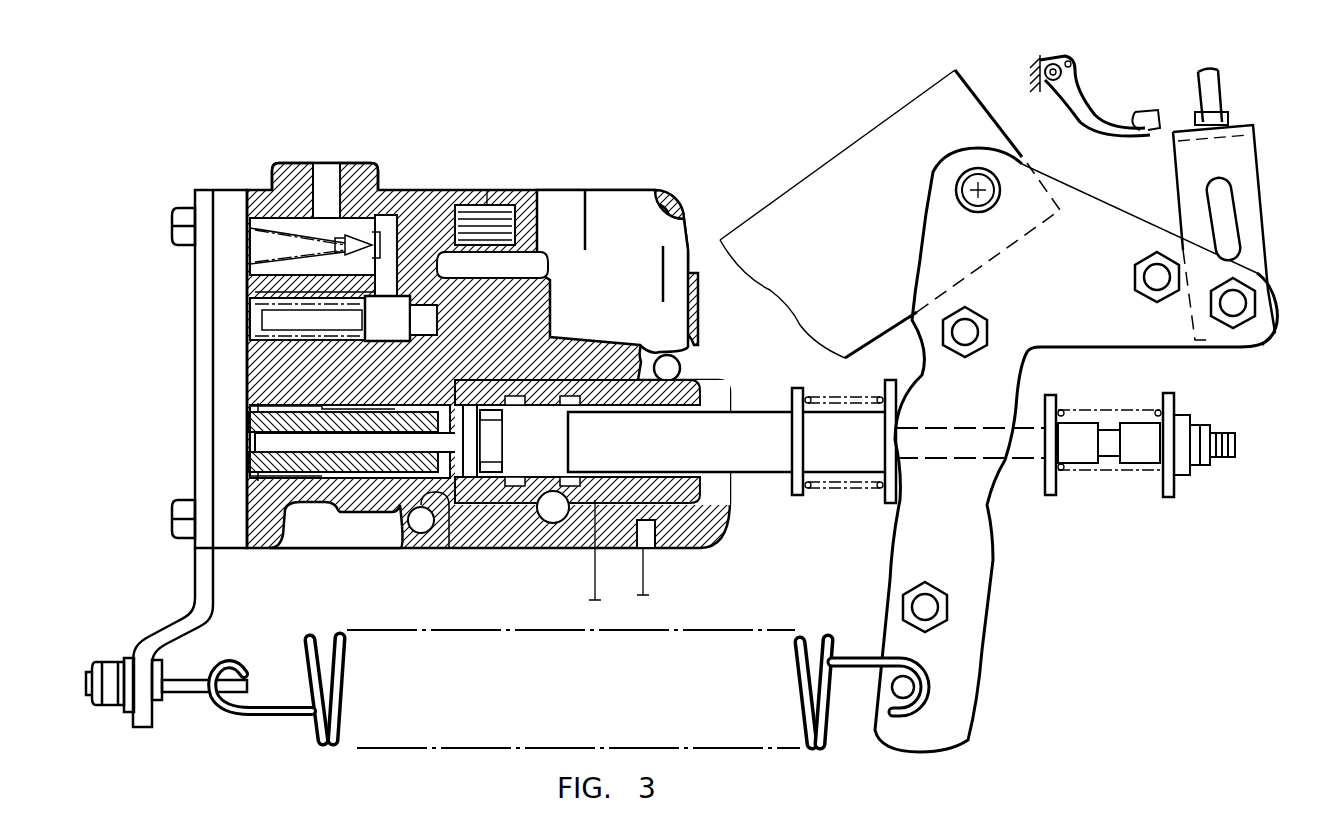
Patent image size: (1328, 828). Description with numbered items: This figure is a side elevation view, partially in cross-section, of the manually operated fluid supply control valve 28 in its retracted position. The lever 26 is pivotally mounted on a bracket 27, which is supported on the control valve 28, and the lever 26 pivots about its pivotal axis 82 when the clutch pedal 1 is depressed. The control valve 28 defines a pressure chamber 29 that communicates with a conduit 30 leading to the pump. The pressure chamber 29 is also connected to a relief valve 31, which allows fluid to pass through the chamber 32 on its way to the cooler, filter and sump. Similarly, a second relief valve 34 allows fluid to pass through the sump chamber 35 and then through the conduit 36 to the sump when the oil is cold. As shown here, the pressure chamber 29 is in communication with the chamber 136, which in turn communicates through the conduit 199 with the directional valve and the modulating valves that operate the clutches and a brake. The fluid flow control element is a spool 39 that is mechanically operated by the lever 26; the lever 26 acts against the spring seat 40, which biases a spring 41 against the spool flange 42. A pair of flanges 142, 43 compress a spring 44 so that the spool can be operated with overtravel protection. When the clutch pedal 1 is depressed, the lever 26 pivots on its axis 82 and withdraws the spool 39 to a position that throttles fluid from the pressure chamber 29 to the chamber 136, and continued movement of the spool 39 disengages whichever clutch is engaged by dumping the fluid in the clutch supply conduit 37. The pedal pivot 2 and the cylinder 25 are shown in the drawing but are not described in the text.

The clutch pedal 1 is at (1108, 120).
The pedal pivot 2 is at (1052, 82).
The hydraulic cylinder 25 is at (1255, 196).
The lever 26 is at (1175, 318).
The bracket 27 is at (880, 127).
The fluid supply control valve 28 is at (488, 361).
The pressure chamber 29 is at (508, 262).
The conduit 30 is at (493, 142).
The relief valve 31 is at (395, 312).
The chamber 32 is at (397, 268).
The relief valve 34 is at (328, 257).
The sump chamber 35 is at (330, 178).
The conduit 36 is at (328, 122).
The clutch supply conduit 37 is at (498, 480).
The spool 39 is at (765, 425).
The spring seat 40 is at (892, 384).
The spring 41 is at (812, 490).
The spool flange 42 is at (797, 480).
The flange 43 is at (1050, 490).
The spring 44 is at (1060, 418).
The pivotal axis 82 is at (975, 198).
The chamber 136 is at (503, 488).
The flange 142 is at (1168, 492).
The conduit 199 is at (455, 603).